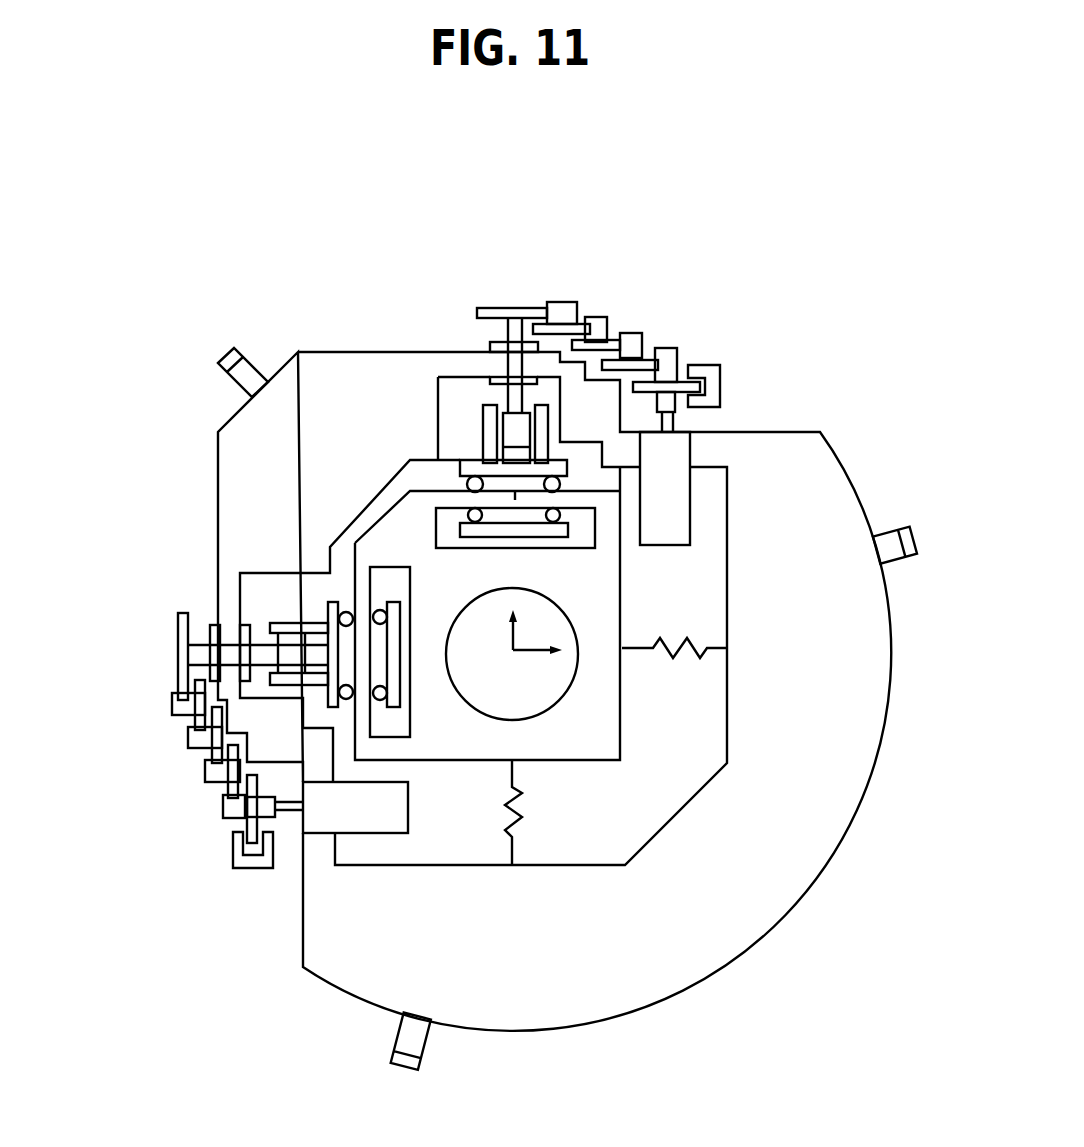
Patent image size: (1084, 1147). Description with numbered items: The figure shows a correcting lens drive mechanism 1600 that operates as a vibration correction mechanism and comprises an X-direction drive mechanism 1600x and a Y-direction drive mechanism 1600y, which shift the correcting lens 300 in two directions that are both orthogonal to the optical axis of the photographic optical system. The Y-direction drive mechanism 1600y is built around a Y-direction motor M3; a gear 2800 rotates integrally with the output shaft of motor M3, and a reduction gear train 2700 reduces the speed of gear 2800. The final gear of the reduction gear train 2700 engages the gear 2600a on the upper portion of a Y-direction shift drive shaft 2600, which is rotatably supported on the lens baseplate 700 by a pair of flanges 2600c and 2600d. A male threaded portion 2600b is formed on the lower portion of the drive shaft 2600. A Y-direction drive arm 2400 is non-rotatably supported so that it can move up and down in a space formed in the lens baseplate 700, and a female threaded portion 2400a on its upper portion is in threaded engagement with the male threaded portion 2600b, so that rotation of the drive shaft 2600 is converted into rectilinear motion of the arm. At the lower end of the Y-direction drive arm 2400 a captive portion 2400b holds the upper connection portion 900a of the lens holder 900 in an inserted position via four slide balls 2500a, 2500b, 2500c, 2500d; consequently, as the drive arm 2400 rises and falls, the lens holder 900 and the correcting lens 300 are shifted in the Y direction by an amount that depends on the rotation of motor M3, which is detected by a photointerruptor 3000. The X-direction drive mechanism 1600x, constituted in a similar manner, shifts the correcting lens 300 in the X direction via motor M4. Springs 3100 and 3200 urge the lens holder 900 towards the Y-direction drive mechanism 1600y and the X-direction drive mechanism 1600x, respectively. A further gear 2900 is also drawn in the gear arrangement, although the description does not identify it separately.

The correcting lens drive mechanism 1600 is at (278, 132).
The X-direction drive mechanism 1600x is at (190, 806).
The Y-direction drive mechanism 1600y is at (590, 236).
The lens baseplate 700 is at (835, 805).
The correcting lens 300 is at (540, 703).
The lens holder 900 is at (562, 760).
The upper connection portion 900a is at (515, 500).
The Y-direction drive arm 2400 is at (483, 411).
The female threaded portion 2400a is at (545, 458).
The captive portion 2400b is at (463, 528).
The slide ball 2500a is at (561, 487).
The slide ball 2500b is at (557, 522).
The slide ball 2500c is at (475, 523).
The slide ball 2500d is at (472, 476).
The Y-direction shift drive shaft 2600 is at (516, 326).
The gear 2600a is at (487, 308).
The male threaded portion 2600b is at (512, 435).
The flange 2600c is at (490, 343).
The flange 2600d is at (490, 380).
The reduction gear train 2700 is at (662, 332).
The gear 2800 is at (675, 348).
The gear 2900 is at (702, 388).
The photointerruptor 3000 is at (722, 365).
The spring 3100 is at (510, 812).
The spring 3200 is at (702, 634).
The Y-direction motor M3 is at (665, 488).
The motor M4 is at (355, 807).